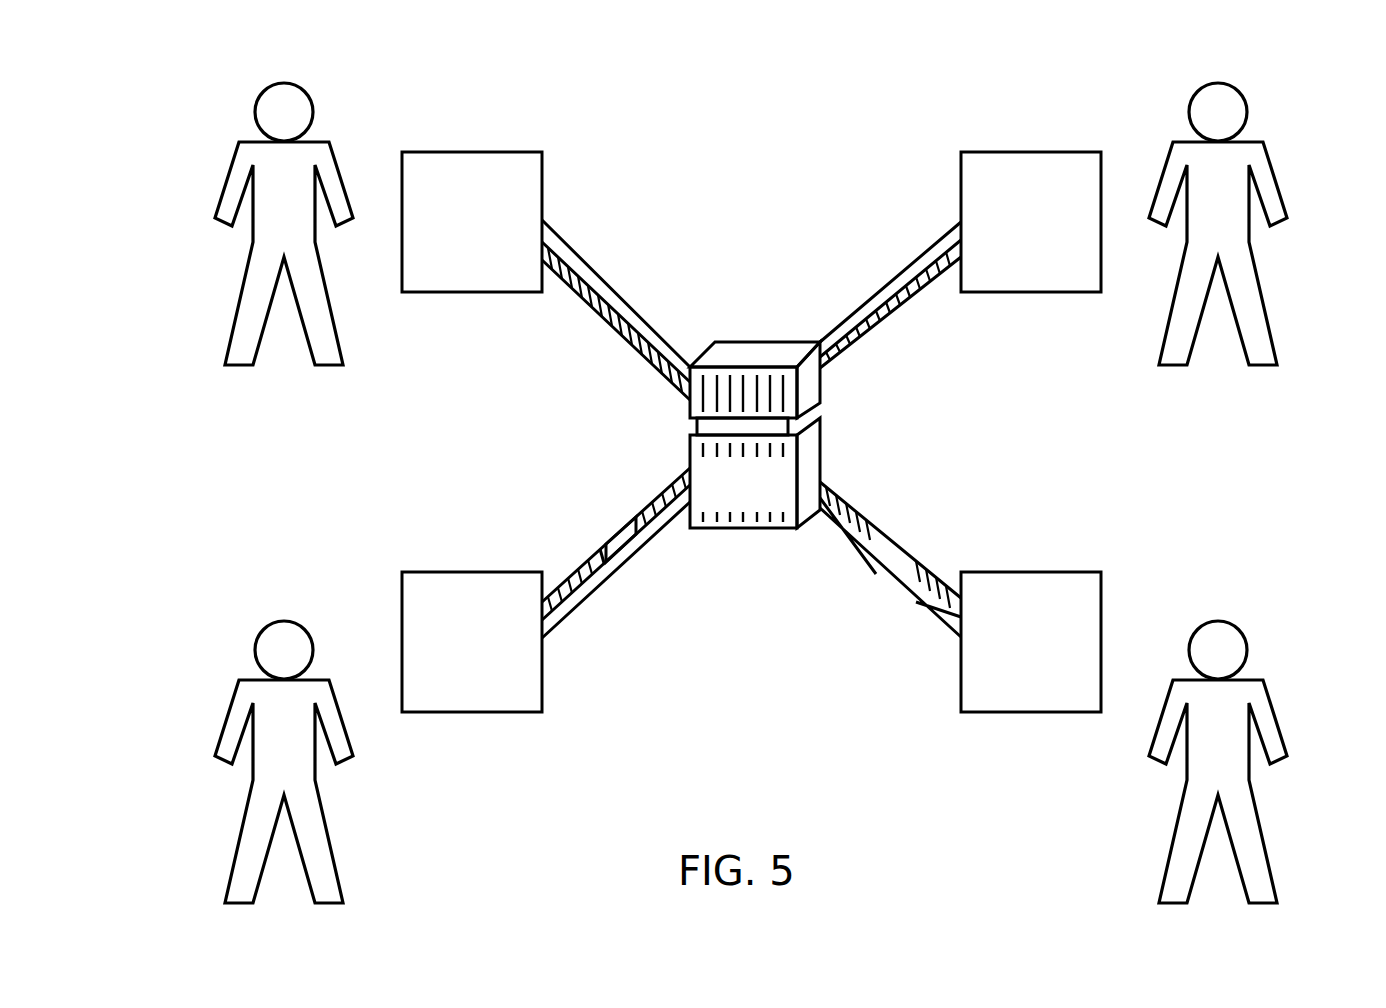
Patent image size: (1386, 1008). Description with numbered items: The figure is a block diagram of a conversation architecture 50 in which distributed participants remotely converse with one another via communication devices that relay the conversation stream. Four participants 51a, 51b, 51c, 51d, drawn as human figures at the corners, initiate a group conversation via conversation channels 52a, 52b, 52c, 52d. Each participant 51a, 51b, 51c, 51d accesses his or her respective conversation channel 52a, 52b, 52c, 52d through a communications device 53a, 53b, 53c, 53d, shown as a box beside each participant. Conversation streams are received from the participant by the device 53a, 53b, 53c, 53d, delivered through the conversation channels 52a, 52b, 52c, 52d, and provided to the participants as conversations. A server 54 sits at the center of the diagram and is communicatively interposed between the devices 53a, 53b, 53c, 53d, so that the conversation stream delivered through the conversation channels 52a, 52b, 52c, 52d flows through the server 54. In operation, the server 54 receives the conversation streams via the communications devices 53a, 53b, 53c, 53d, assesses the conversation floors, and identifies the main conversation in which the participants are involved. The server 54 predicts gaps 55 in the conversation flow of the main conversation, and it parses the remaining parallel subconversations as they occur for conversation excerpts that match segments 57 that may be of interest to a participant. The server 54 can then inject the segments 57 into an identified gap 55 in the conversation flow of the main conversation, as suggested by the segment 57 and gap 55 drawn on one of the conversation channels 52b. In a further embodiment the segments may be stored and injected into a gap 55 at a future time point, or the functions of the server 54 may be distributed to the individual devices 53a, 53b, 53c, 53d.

The conversation architecture 50 is at (198, 102).
The participant 51a is at (220, 193).
The participant 51b is at (220, 732).
The participant 51c is at (1283, 732).
The participant 51d is at (1283, 193).
The conversation channel 52a is at (613, 288).
The conversation channel 52b is at (653, 499).
The conversation channel 52c is at (893, 542).
The conversation channel 52d is at (880, 290).
The communications device 53a is at (489, 236).
The communications device 53b is at (489, 656).
The communications device 53c is at (1048, 656).
The communications device 53d is at (1048, 236).
The server 54 is at (762, 340).
The gap 55 is at (600, 562).
The segment 57 is at (615, 535).